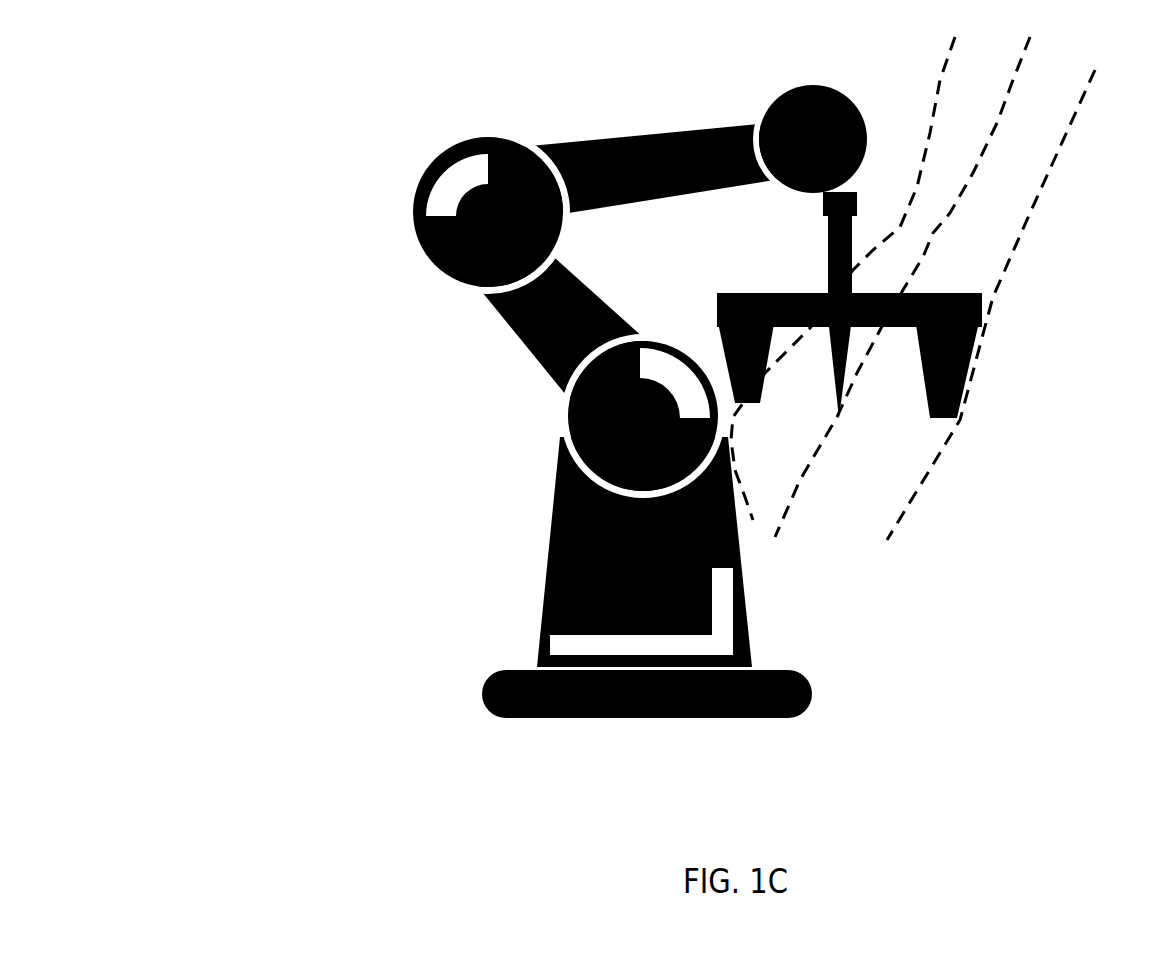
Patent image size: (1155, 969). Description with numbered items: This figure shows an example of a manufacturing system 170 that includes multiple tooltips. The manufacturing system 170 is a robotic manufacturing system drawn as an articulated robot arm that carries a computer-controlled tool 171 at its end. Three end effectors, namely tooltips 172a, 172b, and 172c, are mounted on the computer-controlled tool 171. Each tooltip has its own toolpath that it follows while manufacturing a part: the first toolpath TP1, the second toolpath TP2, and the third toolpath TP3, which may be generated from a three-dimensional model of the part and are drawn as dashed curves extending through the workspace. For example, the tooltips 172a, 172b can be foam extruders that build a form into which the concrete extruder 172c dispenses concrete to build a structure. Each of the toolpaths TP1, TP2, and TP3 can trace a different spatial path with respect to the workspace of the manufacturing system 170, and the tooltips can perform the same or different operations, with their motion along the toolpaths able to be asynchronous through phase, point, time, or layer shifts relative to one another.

The manufacturing system 170 is at (247, 91).
The computer-controlled tool 171 is at (830, 293).
The tooltip 172a is at (967, 372).
The tooltip 172b is at (725, 352).
The tooltip 172c is at (847, 390).
The toolpath 1 TP1 is at (1007, 288).
The toolpath 2 TP2 is at (914, 274).
The toolpath 3 TP3 is at (854, 262).